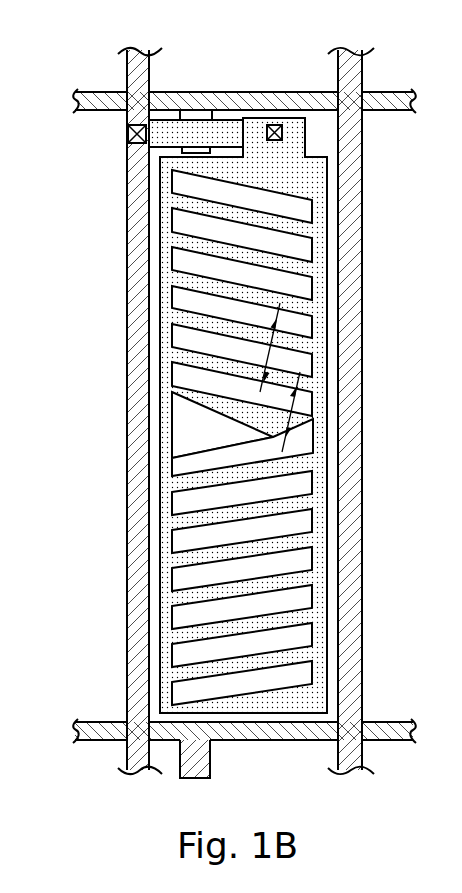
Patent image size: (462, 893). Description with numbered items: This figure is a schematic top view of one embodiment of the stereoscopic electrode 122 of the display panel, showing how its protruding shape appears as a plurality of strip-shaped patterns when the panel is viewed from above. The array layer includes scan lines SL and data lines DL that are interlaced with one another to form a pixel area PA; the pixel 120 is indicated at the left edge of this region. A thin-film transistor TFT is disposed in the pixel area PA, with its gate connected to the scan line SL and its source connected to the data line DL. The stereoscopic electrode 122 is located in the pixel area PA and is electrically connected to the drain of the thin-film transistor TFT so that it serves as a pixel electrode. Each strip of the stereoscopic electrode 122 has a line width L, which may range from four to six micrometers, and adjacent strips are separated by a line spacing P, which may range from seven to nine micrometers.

The scan line SL is at (92, 97).
The data line DL is at (130, 237).
The pixel area PA is at (314, 106).
The thin-film transistor TFT is at (225, 118).
The pixel 120 is at (148, 300).
The stereoscopic electrode 122 is at (312, 185).
The line spacing P is at (270, 352).
The line width L is at (297, 417).